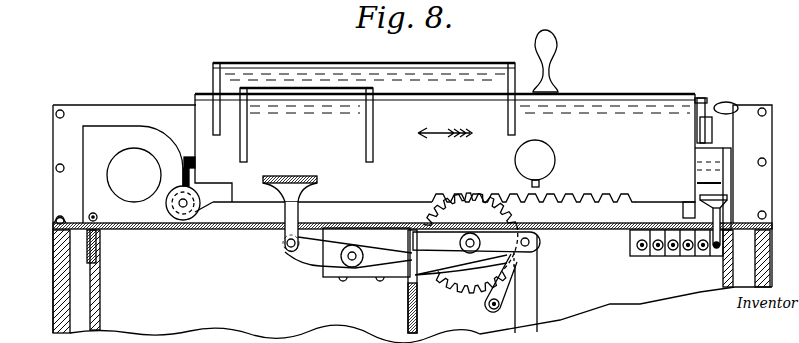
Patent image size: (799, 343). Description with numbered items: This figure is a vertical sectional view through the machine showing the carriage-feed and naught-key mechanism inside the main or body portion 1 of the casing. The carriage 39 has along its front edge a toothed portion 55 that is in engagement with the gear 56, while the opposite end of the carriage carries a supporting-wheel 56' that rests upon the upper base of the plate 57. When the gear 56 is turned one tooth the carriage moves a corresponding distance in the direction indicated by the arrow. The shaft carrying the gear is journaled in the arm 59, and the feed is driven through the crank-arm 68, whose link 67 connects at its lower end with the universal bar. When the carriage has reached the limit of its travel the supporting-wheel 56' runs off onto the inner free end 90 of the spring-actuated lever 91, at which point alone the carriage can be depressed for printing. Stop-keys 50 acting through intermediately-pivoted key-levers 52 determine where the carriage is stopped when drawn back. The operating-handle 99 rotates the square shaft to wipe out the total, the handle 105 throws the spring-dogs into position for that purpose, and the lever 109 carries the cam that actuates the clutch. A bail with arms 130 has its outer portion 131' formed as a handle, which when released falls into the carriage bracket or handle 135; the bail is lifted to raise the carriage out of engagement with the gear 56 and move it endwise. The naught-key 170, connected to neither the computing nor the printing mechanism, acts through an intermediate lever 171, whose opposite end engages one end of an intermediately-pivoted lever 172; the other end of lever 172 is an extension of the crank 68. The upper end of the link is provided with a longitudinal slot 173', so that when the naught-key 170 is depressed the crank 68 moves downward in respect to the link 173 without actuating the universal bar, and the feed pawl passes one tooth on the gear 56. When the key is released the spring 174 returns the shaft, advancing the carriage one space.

The main or body portion of the casing 1 is at (63, 320).
The carriage 39 is at (463, 152).
The stop-key 50 is at (727, 198).
The key-lever 52 is at (687, 244).
The toothed portion 55 is at (597, 186).
The gear 56 is at (471, 222).
The supporting-wheel 56' is at (197, 186).
The plate 57 is at (145, 229).
The arm 59 is at (407, 283).
The link 67 is at (525, 315).
The crank-arm 68 is at (530, 243).
The free end of the spring-actuated lever 90 is at (65, 222).
The spring-actuated lever 91 is at (88, 250).
The operating-handle 99 is at (706, 114).
The handle 105 is at (548, 150).
The lever 109 is at (555, 55).
The arms of the bail 130 is at (216, 127).
The handle of the bail 131' is at (364, 52).
The carriage bracket or handle 135 is at (313, 97).
The naught-key 170 is at (300, 190).
The intermediate lever 171 is at (318, 250).
The intermediately-pivoted lever 172 is at (476, 242).
The link 173 is at (535, 283).
The longitudinal slot 173' is at (566, 259).
The spring 174 is at (437, 279).